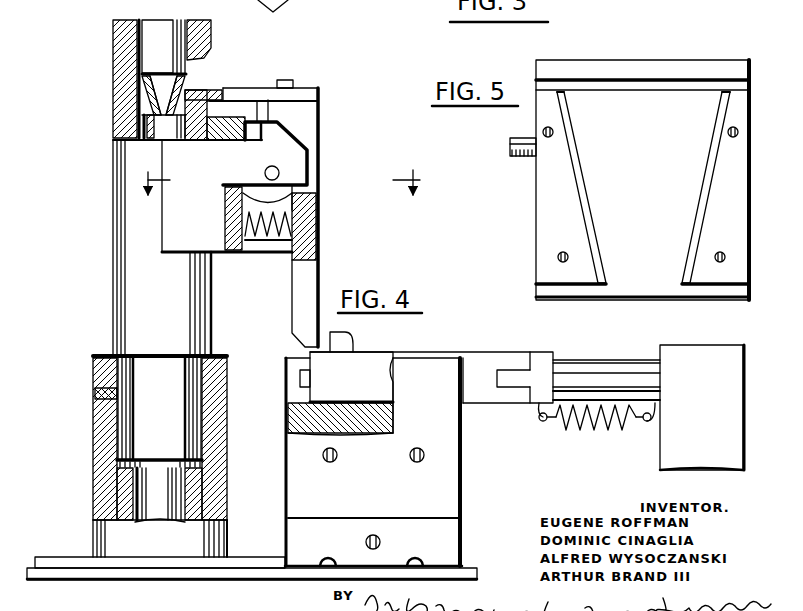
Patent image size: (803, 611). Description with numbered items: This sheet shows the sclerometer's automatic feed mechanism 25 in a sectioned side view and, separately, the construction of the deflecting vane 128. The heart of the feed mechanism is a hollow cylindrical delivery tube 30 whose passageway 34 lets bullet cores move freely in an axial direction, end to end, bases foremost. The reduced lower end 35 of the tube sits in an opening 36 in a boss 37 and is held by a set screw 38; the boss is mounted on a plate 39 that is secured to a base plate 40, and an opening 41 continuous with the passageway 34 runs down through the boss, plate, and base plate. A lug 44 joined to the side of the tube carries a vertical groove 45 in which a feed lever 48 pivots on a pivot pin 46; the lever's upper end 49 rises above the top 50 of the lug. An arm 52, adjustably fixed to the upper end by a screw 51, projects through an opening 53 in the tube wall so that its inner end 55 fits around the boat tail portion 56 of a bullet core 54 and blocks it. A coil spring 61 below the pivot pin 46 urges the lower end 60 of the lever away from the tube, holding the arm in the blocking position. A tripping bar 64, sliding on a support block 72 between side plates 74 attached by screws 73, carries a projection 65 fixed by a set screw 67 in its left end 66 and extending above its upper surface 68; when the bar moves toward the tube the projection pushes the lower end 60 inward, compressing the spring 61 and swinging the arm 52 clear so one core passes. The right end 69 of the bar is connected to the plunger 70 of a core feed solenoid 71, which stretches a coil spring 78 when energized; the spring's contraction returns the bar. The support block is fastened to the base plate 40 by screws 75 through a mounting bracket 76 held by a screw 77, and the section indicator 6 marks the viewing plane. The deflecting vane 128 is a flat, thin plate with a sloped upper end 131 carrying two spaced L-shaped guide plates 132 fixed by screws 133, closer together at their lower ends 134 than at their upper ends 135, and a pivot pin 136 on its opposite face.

In FIG. 4, the section line 6- 6 is at (284, 182).
In FIG. 4, the feed mechanism 25 is at (324, 215).
In FIG. 4, the delivery tube 30 is at (112, 205).
In FIG. 4, the passageway 34 is at (162, 128).
In FIG. 4, the lower end of the delivery tube 35 is at (228, 410).
In FIG. 4, the opening 36 is at (198, 405).
In FIG. 4, the boss 37 is at (226, 388).
In FIG. 4, the set screw 38 is at (95, 393).
In FIG. 4, the plate 39 is at (51, 557).
In FIG. 4, the base plate 40 is at (61, 576).
In FIG. 4, the opening 41 is at (155, 505).
In FIG. 4, the lug 44 is at (181, 256).
In FIG. 4, the groove 45 is at (248, 252).
In FIG. 4, the pivot pin 46 is at (279, 172).
In FIG. 4, the feed lever 48 is at (324, 135).
In FIG. 4, the upper end of the feed lever 49 is at (312, 118).
In FIG. 4, the top of lug 50 is at (268, 100).
In FIG. 4, the screw 51 is at (295, 84).
In FIG. 4, the arm 52 is at (312, 97).
In FIG. 4, the opening 53 is at (200, 58).
In FIG. 4, the bullet core 54 is at (157, 44).
In FIG. 4, the inner end of the arm 55 is at (203, 90).
In FIG. 4, the boat tail portion 56 is at (157, 98).
In FIG. 4, the lower end of the feed lever 60 is at (294, 310).
In FIG. 4, the coil spring 61 is at (277, 252).
In FIG. 4, the tripping bar 64 is at (470, 350).
In FIG. 4, the projection 65 is at (342, 342).
In FIG. 4, the left end of the tripping bar 66 is at (318, 360).
In FIG. 4, the set screw 67 is at (299, 376).
In FIG. 4, the upper surface of the tripping bar 68 is at (505, 352).
In FIG. 4, the right end of the tripping bar 69 is at (506, 405).
In FIG. 4, the plunger 70 is at (603, 375).
In FIG. 4, the core feed solenoid 71 is at (690, 345).
In FIG. 4, the support block 72 is at (292, 426).
In FIG. 4, the screws 73 is at (424, 455).
In FIG. 4, the side plates 74 is at (452, 490).
In FIG. 4, the screws 75 is at (418, 562).
In FIG. 4, the mounting bracket 76 is at (450, 528).
In FIG. 4, the screw 77 is at (366, 538).
In FIG. 4, the coil spring 78 is at (587, 435).
In FIG. 5, the deflecting vane 128 is at (638, 58).
In FIG. 5, the upper end of the vane 131 is at (705, 68).
In FIG. 5, the L-shaped guide plates 132 is at (699, 192).
In FIG. 5, the screws 133 is at (728, 134).
In FIG. 5, the lower ends of the guide plates 134 is at (684, 276).
In FIG. 5, the upper ends of the guide plates 135 is at (718, 122).
In FIG. 5, the pivot pin 136 is at (522, 152).